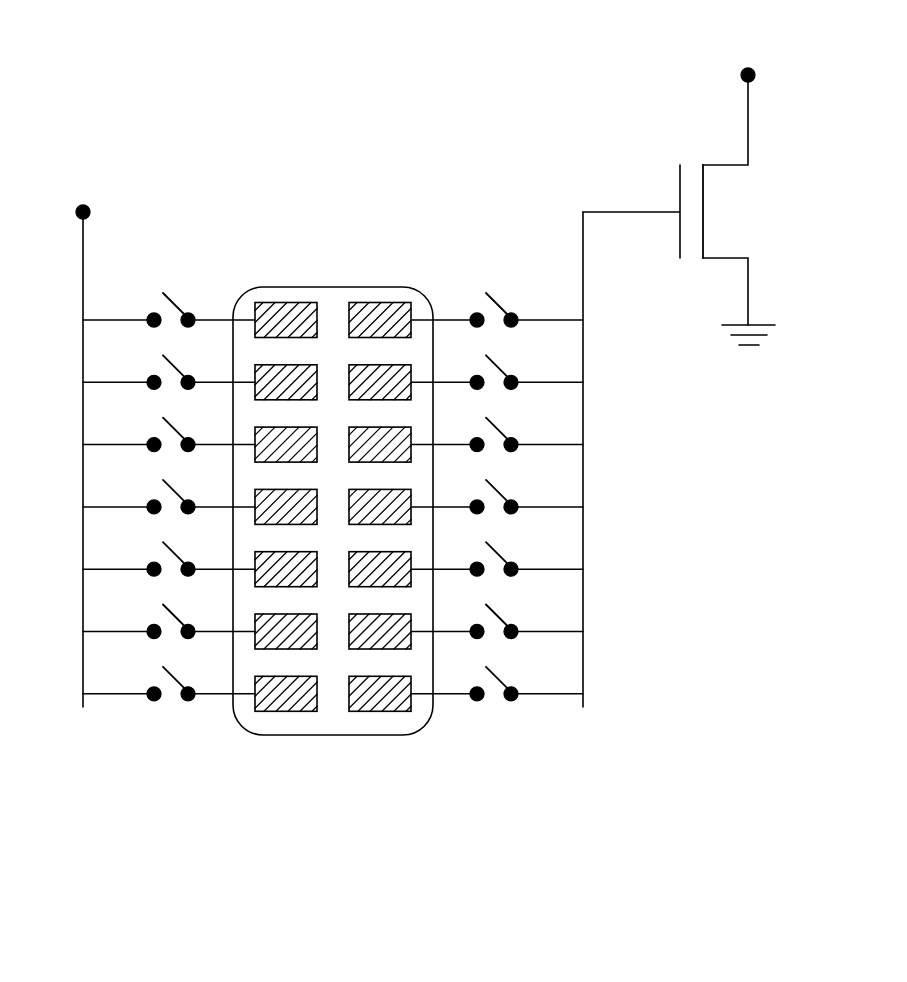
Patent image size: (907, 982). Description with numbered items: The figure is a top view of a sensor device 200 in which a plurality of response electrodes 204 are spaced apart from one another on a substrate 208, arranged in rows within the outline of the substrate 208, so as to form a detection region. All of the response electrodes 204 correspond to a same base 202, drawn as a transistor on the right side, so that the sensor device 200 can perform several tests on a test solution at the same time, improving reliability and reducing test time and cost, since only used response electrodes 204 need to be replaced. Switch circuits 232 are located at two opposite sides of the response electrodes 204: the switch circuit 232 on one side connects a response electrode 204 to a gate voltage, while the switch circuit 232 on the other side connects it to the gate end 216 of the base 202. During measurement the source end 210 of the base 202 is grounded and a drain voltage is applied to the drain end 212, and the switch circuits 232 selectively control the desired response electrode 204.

The sensor device 200 is at (141, 146).
The base 202 is at (765, 213).
The response electrode 204 is at (379, 698).
The substrate 208 is at (277, 727).
The source end 210 is at (750, 298).
The drain end 212 is at (750, 121).
The gate end 216 is at (643, 193).
The switch circuit 232 is at (192, 307).